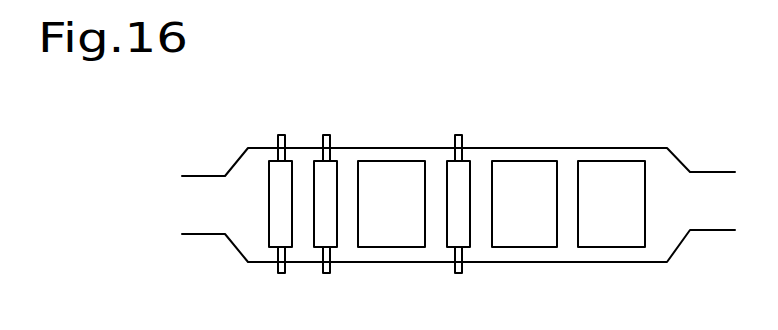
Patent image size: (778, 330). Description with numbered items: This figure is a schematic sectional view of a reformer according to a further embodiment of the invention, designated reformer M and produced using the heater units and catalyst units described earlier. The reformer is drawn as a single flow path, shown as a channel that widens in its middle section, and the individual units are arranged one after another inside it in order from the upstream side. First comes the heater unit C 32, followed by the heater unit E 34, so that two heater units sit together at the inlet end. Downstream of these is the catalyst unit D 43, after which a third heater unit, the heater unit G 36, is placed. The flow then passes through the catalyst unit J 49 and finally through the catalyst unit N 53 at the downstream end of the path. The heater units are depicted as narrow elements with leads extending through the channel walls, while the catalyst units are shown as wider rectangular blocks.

The heater unit C 32 is at (270, 156).
The heater unit E 34 is at (332, 158).
The heater unit G 36 is at (447, 157).
The catalyst unit D 43 is at (388, 167).
The catalyst unit J 49 is at (520, 161).
The catalyst unit N 53 is at (607, 162).